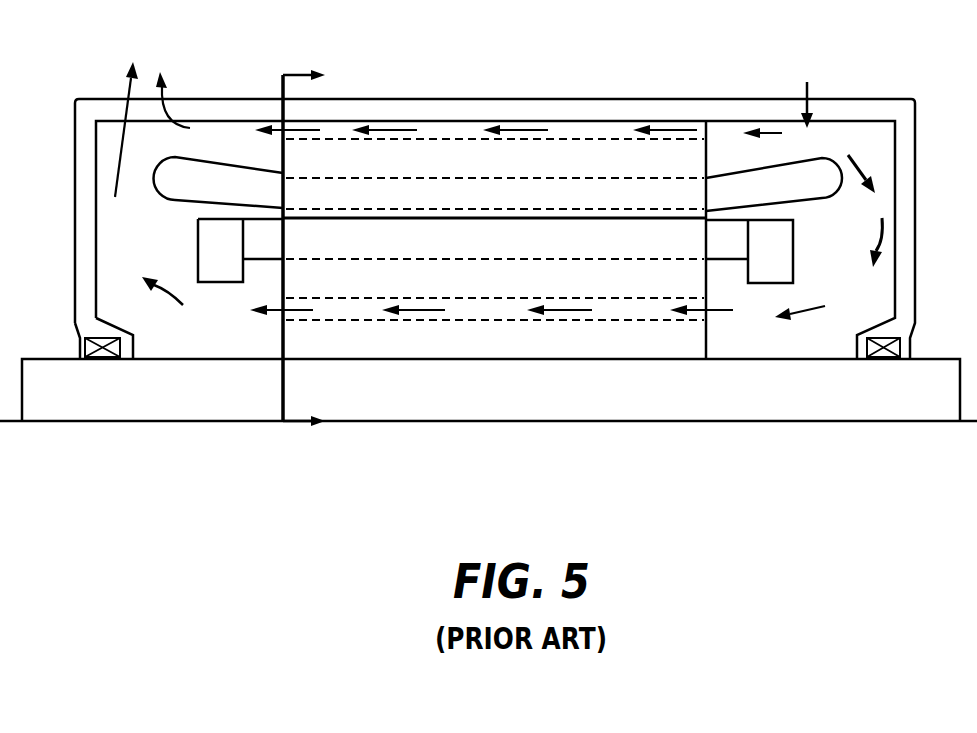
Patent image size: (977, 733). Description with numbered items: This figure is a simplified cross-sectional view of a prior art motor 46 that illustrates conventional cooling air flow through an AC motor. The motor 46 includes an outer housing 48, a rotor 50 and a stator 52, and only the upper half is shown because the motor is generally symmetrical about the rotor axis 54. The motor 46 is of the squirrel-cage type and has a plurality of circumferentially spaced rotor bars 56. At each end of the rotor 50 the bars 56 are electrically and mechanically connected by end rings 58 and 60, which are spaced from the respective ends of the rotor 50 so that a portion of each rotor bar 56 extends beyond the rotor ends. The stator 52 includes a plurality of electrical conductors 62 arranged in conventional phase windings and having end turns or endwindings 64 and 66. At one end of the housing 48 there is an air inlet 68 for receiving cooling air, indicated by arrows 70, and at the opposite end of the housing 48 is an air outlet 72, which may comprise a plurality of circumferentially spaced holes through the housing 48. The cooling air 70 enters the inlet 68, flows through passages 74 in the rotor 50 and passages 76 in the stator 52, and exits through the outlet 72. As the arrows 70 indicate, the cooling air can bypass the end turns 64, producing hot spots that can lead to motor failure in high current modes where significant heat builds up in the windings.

The prior art motor 46 is at (568, 84).
The outer housing 48 is at (368, 112).
The rotor 50 is at (477, 342).
The stator 52 is at (491, 168).
The rotor axis 54 is at (975, 424).
The rotor bars 56 is at (732, 250).
The end ring 58 is at (202, 267).
The end ring 60 is at (770, 275).
The electrical conductors 62 is at (400, 188).
The end turns 64 is at (167, 185).
The end turns 66 is at (817, 180).
The air inlet 68 is at (845, 112).
The cooling air 70 is at (807, 90).
The air outlet 72 is at (200, 108).
The passages 74 is at (317, 313).
The passages 76 is at (463, 132).